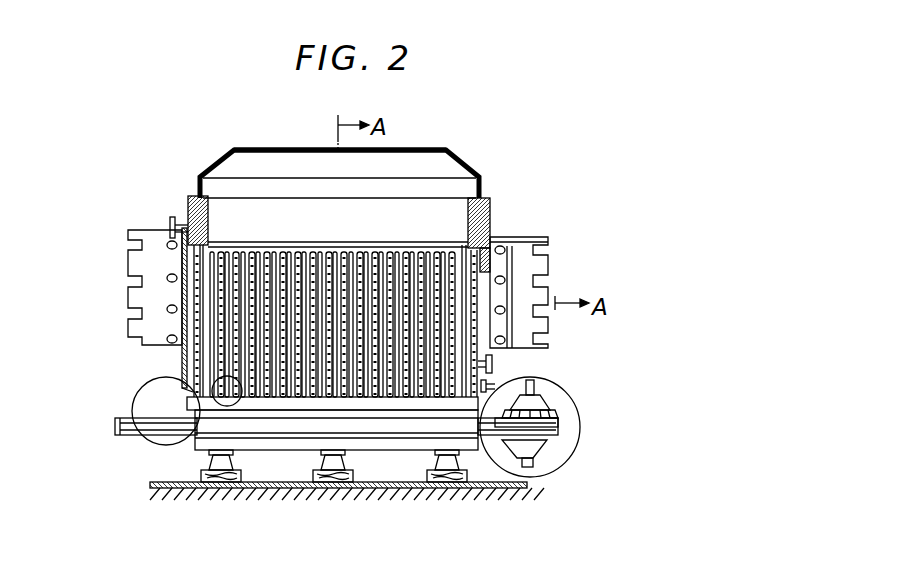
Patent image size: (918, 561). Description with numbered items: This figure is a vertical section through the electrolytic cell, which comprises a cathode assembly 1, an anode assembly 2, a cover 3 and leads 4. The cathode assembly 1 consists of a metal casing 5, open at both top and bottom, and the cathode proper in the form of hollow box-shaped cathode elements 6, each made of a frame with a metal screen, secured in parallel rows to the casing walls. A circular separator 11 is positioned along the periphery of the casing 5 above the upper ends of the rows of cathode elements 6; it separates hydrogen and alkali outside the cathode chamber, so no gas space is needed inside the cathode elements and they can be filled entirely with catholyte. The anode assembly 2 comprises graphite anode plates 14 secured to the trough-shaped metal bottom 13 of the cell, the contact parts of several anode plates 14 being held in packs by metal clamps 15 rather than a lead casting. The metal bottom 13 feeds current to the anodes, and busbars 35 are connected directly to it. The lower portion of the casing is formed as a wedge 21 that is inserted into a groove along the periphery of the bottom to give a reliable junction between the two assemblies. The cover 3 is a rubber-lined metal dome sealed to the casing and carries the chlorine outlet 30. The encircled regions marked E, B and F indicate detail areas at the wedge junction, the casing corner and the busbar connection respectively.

The cover 3 is at (228, 162).
The chlorine outlet 30 is at (262, 148).
The circular separator 11 is at (468, 232).
The cathode assembly 1 is at (355, 303).
The cathode elements 6 is at (455, 287).
The casing 5 is at (477, 318).
The leads 4 is at (552, 338).
The anode plates 14 is at (213, 362).
The wedge 21 is at (190, 388).
The anode assembly 2 is at (197, 440).
The metal clamps 15 is at (458, 407).
The metal bottom 13 is at (383, 420).
The busbars 35 is at (120, 432).
The detail circle E is at (148, 443).
The detail circle B is at (230, 408).
The detail circle F is at (568, 455).